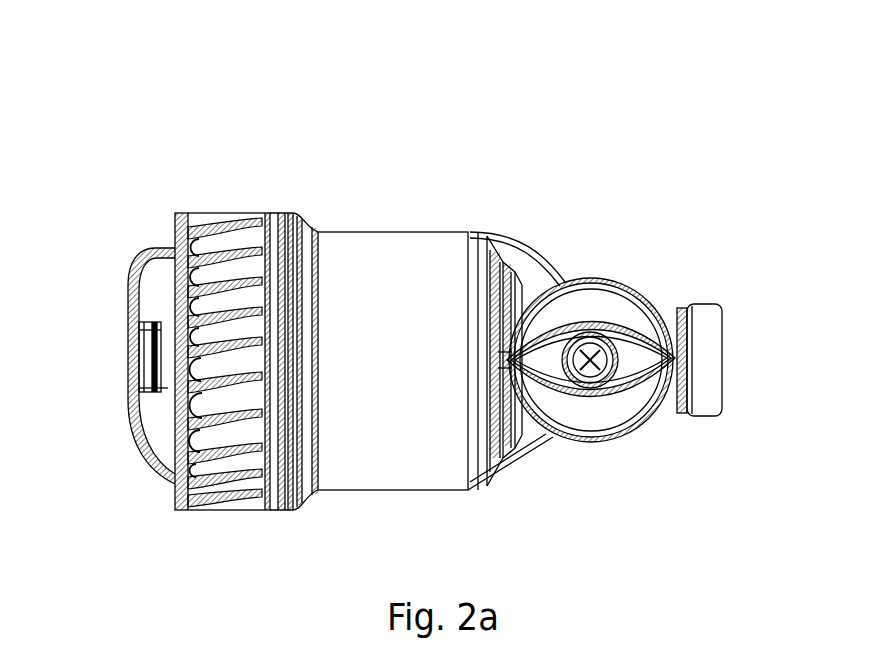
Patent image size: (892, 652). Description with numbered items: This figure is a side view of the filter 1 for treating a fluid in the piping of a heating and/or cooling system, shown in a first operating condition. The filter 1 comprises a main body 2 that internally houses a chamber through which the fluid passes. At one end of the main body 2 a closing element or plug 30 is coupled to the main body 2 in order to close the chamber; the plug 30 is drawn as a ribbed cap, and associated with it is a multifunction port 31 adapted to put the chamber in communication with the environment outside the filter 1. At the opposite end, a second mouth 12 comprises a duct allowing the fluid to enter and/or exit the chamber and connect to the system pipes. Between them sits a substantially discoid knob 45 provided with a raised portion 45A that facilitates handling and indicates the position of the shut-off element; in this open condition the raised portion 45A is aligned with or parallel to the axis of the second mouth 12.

The filter 1 is at (268, 94).
The main body 2 is at (381, 250).
The closing element or plug 30 is at (184, 236).
The port 31 is at (145, 372).
The knob 45 is at (628, 408).
The raised portion 45A is at (553, 372).
The second mouth 12 is at (696, 397).